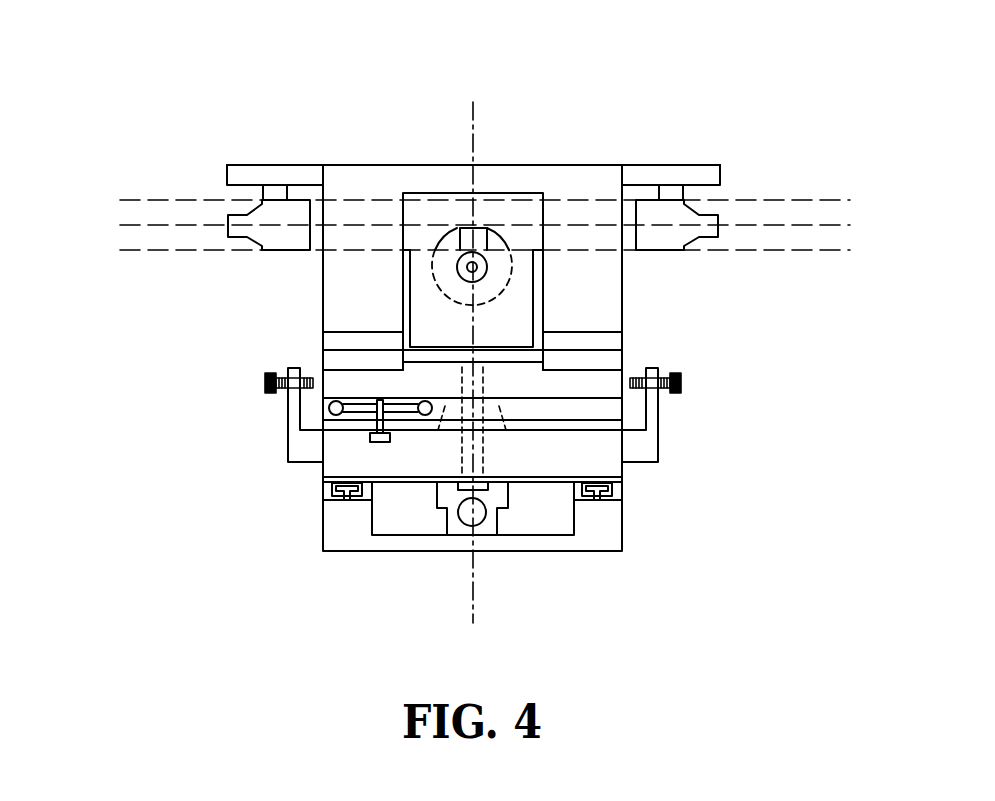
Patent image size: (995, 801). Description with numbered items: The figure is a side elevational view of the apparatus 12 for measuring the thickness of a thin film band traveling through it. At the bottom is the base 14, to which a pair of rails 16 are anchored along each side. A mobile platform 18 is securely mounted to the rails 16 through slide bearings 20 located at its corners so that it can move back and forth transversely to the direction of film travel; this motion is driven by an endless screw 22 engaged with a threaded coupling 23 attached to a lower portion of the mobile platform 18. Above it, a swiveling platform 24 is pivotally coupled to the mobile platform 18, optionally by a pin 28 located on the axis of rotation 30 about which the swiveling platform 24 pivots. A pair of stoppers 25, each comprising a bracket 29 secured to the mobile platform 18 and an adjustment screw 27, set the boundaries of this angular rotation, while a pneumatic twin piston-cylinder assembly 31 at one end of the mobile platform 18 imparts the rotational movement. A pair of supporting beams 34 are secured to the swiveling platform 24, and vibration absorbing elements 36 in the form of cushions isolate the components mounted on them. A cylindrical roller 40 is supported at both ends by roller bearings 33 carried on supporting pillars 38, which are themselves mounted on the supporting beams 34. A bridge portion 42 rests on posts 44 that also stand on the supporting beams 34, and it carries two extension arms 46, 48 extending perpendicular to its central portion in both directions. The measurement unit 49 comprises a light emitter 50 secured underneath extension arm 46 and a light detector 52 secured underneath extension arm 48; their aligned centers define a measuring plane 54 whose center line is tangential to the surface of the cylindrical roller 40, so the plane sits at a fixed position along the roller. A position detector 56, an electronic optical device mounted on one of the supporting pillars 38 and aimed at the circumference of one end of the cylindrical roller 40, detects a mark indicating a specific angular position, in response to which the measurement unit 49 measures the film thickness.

The apparatus 12 is at (105, 72).
The base 14 is at (347, 517).
The rails 16 is at (347, 497).
The mobile platform 18 is at (603, 470).
The slide bearings 20 is at (325, 487).
The endless screw 22 is at (478, 512).
The threaded coupling 23 is at (497, 495).
The swiveling platform 24 is at (600, 383).
The stoppers 25 is at (692, 403).
The adjustment screw 27 is at (682, 387).
The pin 28 is at (457, 485).
The bracket 29 is at (637, 448).
The axis of rotation 30 is at (475, 120).
The pneumatic twin piston-cylinder assembly 31 is at (368, 410).
The roller bearings 33 is at (458, 262).
The supporting beams 34 is at (580, 343).
The vibration absorbing elements 36 is at (345, 360).
The supporting pillars 38 is at (440, 322).
The cylindrical roller 40 is at (503, 233).
The bridge portion 42 is at (502, 182).
The posts 44 is at (363, 275).
The extension arm 46 is at (260, 172).
The extension arm 48 is at (687, 172).
The measurement unit 49 is at (728, 240).
The light emitter 50 is at (260, 212).
The light detector 52 is at (683, 213).
The measuring plane 54 is at (122, 197).
The position detector 56 is at (467, 238).